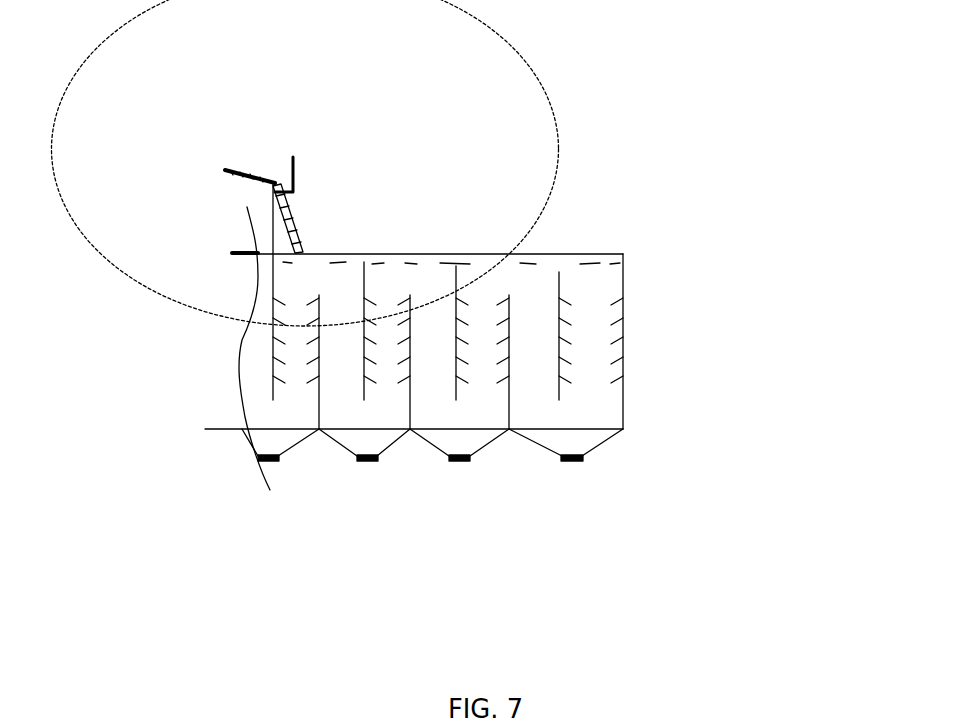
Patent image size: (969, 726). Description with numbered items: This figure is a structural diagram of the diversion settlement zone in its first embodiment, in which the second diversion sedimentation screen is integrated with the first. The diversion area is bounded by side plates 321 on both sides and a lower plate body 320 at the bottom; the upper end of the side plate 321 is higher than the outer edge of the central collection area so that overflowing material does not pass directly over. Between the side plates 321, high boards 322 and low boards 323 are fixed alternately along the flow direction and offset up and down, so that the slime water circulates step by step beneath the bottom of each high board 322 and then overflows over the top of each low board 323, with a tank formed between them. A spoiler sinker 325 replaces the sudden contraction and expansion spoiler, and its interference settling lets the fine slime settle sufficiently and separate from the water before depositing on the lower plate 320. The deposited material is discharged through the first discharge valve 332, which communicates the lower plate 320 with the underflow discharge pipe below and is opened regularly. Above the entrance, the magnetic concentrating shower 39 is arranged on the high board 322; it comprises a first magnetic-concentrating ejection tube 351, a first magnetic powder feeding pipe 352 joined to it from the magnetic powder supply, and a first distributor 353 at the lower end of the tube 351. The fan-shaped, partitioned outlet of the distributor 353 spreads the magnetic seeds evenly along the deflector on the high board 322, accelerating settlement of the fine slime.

The magnetic concentrating shower 39 is at (528, 51).
The lower plate body 320 is at (585, 427).
The side plate 321 is at (623, 254).
The high board 322 is at (272, 378).
The low board 323 is at (319, 403).
The spoiler sinker 325 is at (565, 380).
The first discharge valve 332 is at (577, 463).
The first magnetic-concentrating ejection tube 351 is at (273, 185).
The first magnetic powder feeding pipe 352 is at (290, 185).
The first distributor 353 is at (290, 213).